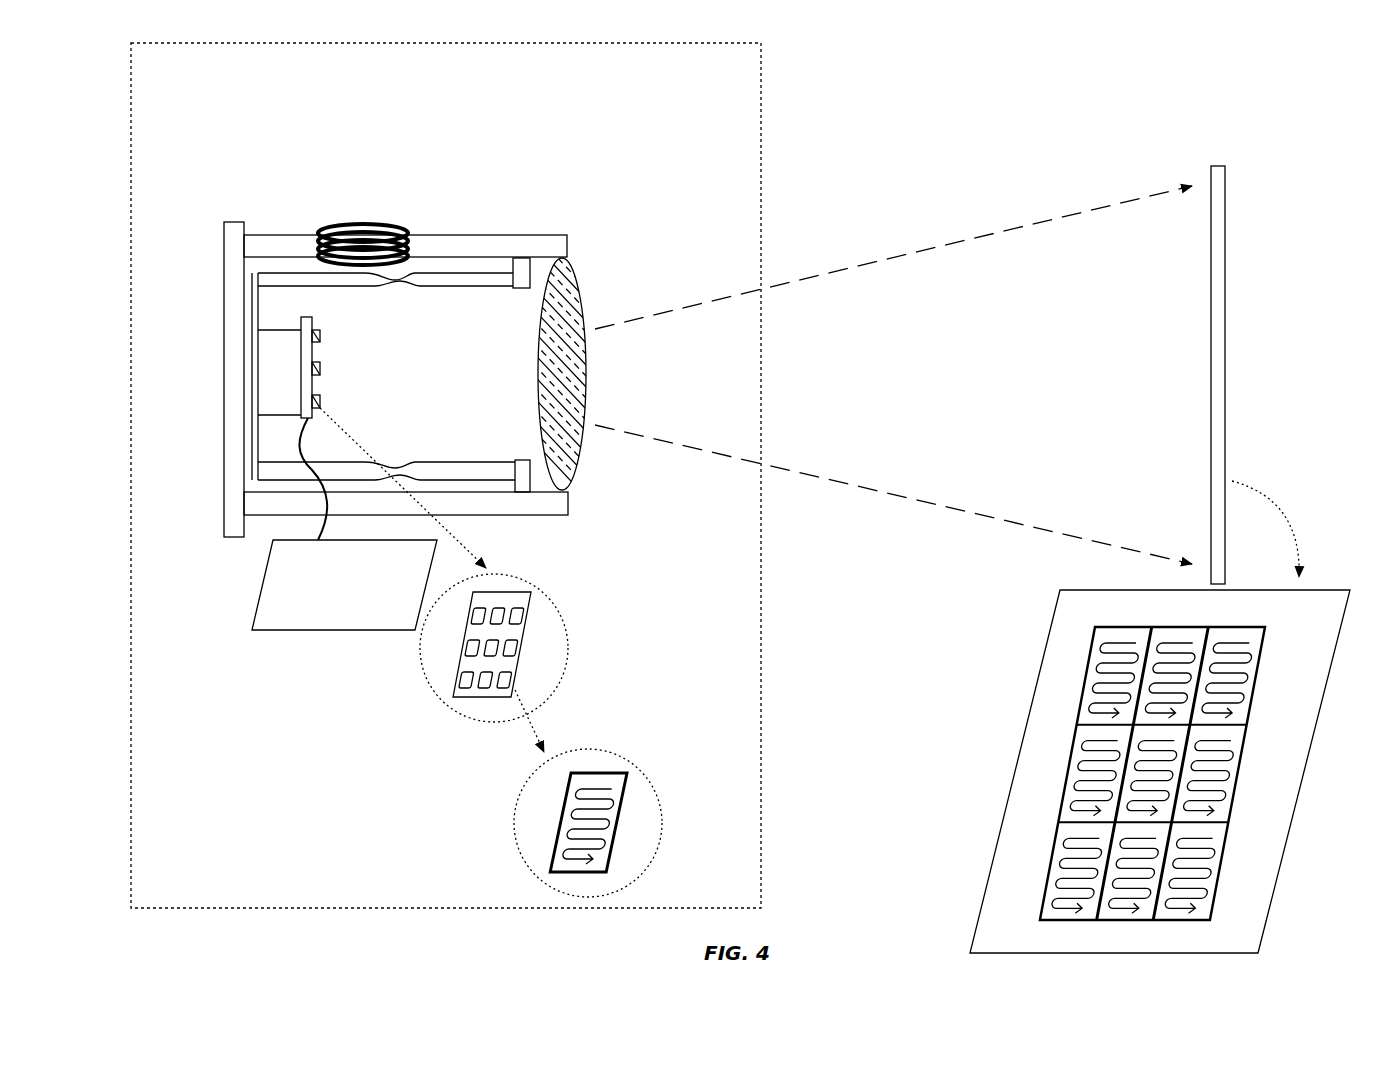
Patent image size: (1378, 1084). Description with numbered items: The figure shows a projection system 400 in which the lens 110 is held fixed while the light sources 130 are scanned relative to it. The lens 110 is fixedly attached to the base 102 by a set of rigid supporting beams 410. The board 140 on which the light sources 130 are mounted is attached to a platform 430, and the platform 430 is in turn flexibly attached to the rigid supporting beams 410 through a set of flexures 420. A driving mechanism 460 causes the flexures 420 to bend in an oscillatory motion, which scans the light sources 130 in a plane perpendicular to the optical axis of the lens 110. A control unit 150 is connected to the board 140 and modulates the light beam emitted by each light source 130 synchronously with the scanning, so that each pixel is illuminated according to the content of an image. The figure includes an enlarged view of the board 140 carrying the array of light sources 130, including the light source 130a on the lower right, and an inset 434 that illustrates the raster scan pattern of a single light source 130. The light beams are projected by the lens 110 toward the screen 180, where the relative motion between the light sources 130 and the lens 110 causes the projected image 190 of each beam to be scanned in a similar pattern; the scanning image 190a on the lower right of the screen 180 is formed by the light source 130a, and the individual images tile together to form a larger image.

The base 102 is at (233, 303).
The lens 110 is at (540, 338).
The light sources 130 is at (322, 335).
The light source 130a is at (515, 690).
The board 140 is at (312, 320).
The control unit 150 is at (348, 615).
The screen 180 is at (1213, 325).
The scanning image 190 is at (1087, 650).
The scanning image 190a is at (1215, 885).
The projection system 400 is at (761, 640).
The rigid supporting beams 410 is at (538, 250).
The flexures 420 is at (450, 278).
The platform 430 is at (258, 368).
The inset 434 is at (650, 782).
The driving mechanism 460 is at (362, 226).